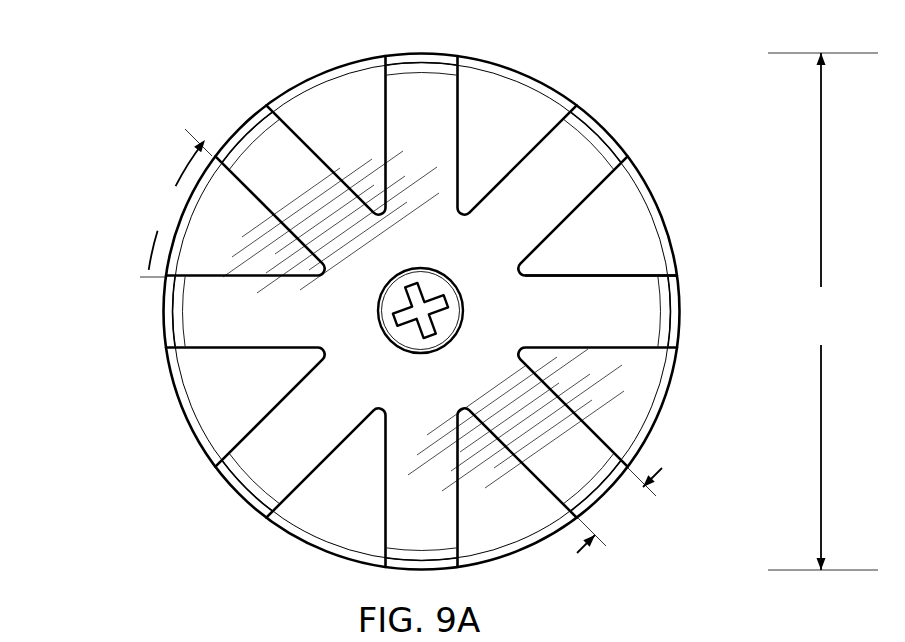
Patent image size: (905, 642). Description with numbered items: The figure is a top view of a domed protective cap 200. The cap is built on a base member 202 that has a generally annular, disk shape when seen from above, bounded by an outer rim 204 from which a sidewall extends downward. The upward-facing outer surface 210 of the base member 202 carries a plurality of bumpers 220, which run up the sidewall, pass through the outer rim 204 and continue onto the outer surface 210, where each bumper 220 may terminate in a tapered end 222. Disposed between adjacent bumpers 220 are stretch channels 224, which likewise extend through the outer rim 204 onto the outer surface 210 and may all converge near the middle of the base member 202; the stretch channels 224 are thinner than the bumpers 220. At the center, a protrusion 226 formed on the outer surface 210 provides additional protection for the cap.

The protective cap 200 is at (128, 98).
The base member 202 is at (585, 155).
The outer rim 204 is at (655, 413).
The outer surface 210 is at (413, 147).
The bumpers 220 is at (235, 195).
The tapered end 222 is at (580, 258).
The stretch channels 224 is at (267, 150).
The protrusion 226 is at (393, 345).